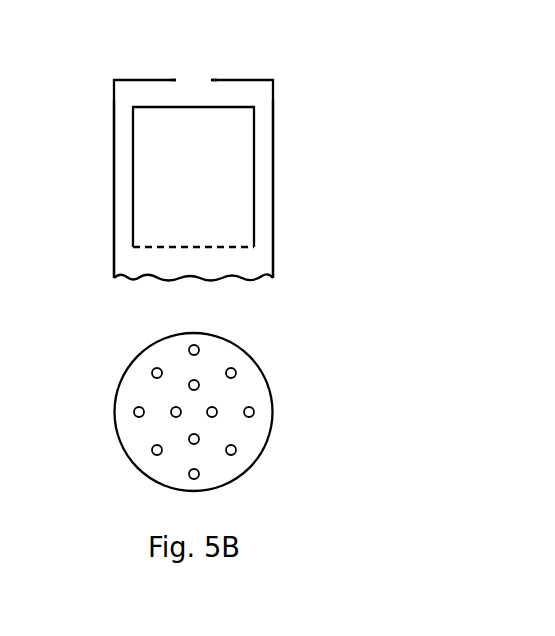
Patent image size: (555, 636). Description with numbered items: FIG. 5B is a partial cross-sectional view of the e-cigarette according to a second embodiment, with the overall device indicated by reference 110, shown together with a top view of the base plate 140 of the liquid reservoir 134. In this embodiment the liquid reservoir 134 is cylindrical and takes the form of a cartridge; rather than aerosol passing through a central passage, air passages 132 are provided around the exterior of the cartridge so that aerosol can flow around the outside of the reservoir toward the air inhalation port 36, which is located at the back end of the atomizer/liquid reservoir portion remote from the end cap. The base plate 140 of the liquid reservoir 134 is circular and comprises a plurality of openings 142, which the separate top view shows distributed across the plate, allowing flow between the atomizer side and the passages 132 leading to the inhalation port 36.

The air inhalation port 36 is at (193, 78).
The heating assembly 110 is at (329, 44).
The air passage 132 is at (127, 230).
The liquid reservoir 134 is at (226, 185).
The base plate 140 is at (233, 248).
The opening 142 is at (160, 248).